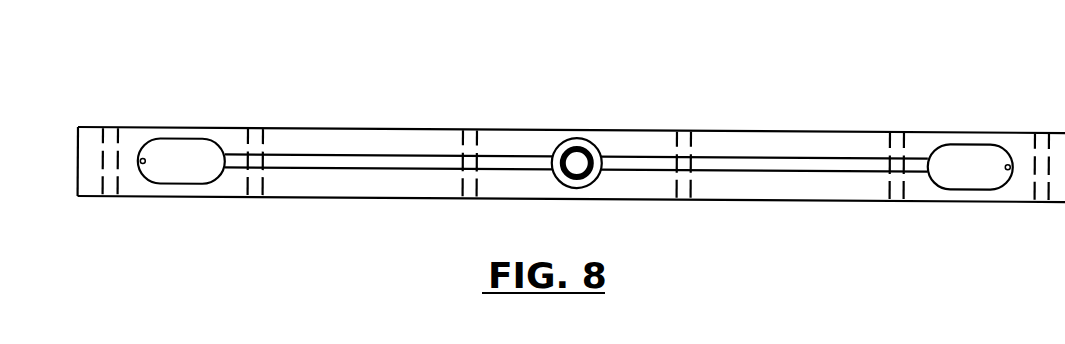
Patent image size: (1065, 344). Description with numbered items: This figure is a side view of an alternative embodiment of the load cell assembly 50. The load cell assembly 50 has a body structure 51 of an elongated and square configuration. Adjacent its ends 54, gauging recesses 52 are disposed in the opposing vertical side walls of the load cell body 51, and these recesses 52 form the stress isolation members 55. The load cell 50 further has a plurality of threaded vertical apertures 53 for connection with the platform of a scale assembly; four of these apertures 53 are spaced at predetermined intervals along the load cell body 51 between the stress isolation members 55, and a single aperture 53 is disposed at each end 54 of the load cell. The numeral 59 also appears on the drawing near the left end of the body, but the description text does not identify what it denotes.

The load cell assembly 50 is at (697, 92).
The body structure 51 is at (353, 145).
The gauging recesses 52 is at (182, 140).
The threaded vertical apertures 53 is at (467, 198).
The ends 54 is at (1017, 145).
The stress isolation members 55 is at (187, 176).
The left end portion 59 is at (88, 190).